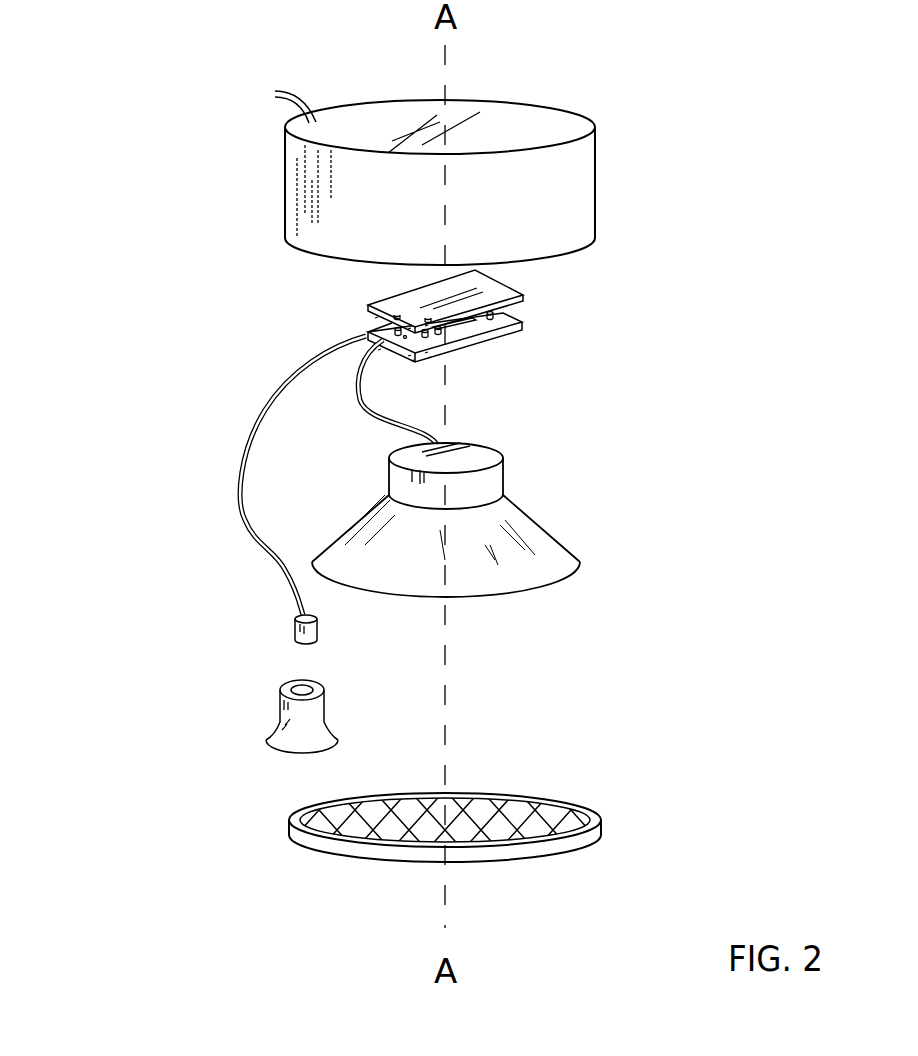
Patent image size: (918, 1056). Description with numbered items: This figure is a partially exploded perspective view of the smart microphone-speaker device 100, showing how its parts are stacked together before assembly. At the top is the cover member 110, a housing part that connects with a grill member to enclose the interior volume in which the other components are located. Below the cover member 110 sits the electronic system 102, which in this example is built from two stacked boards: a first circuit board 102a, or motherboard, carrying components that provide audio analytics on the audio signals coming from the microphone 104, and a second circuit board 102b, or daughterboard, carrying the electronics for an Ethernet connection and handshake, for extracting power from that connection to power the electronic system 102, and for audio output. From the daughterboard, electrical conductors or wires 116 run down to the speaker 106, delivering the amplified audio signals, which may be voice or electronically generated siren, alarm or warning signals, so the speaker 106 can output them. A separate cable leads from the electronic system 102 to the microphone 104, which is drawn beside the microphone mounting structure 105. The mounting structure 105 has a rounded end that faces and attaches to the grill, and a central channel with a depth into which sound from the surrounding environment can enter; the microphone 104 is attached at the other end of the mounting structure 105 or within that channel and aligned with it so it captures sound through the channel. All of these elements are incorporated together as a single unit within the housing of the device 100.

The smart microphone-speaker device 100 is at (140, 100).
The cover member 110 is at (580, 201).
The electronic system 102 is at (565, 318).
The first circuit board 102a is at (497, 288).
The second circuit board 102b is at (522, 323).
The electrical conductors or wires 116 is at (380, 418).
The speaker 106 is at (540, 520).
The microphone 104 is at (292, 632).
The microphone mounting structure 105 is at (268, 728).